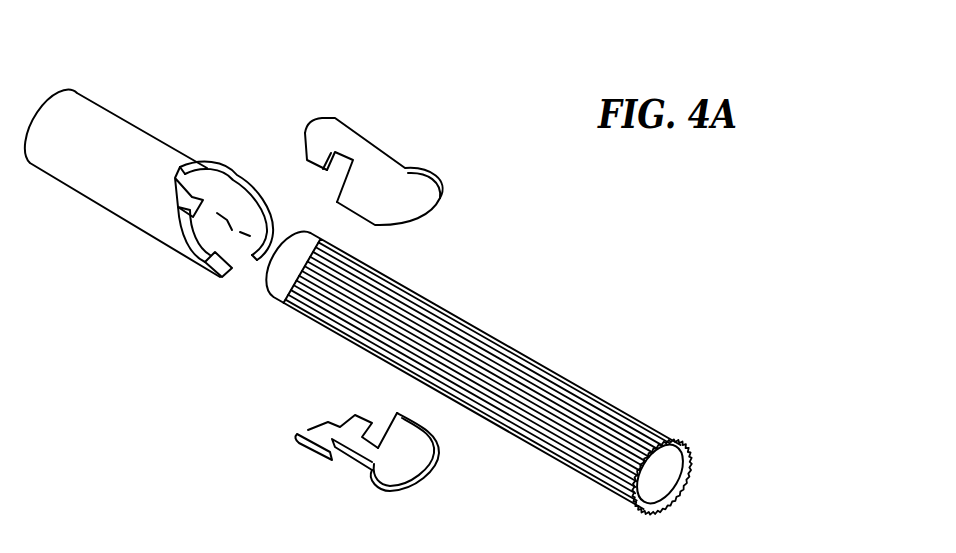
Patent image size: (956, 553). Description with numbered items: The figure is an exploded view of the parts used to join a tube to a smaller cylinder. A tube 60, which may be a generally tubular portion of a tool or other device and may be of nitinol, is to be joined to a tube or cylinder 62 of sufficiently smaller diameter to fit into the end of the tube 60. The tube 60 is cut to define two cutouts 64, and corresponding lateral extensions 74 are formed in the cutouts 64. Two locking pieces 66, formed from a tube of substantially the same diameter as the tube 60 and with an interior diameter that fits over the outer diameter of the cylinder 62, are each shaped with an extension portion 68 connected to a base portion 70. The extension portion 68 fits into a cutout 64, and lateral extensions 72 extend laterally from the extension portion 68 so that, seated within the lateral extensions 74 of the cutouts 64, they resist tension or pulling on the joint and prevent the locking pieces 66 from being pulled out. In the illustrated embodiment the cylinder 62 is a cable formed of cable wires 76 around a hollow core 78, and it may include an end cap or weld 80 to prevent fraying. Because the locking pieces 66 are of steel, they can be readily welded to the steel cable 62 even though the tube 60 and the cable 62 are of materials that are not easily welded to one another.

The tube 60 is at (97, 110).
The tube or cylinder 62 is at (660, 427).
The cutouts 64 is at (200, 187).
The locking pieces 66 is at (378, 152).
The extension portion 68 is at (345, 130).
The base portion 70 is at (413, 163).
The lateral extensions 72 is at (309, 116).
The lateral extensions 74 is at (235, 227).
The cable wires 76 is at (565, 376).
The hollow core 78 is at (667, 480).
The end cap or weld 80 is at (318, 243).